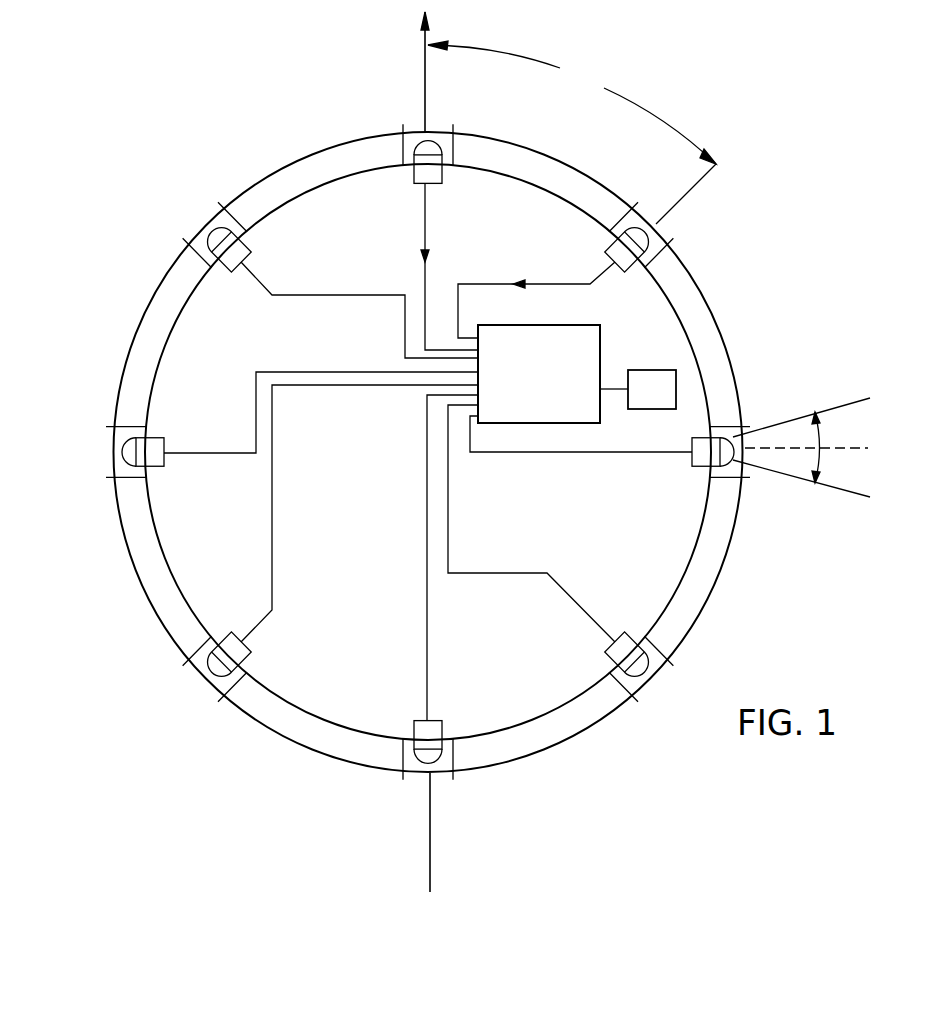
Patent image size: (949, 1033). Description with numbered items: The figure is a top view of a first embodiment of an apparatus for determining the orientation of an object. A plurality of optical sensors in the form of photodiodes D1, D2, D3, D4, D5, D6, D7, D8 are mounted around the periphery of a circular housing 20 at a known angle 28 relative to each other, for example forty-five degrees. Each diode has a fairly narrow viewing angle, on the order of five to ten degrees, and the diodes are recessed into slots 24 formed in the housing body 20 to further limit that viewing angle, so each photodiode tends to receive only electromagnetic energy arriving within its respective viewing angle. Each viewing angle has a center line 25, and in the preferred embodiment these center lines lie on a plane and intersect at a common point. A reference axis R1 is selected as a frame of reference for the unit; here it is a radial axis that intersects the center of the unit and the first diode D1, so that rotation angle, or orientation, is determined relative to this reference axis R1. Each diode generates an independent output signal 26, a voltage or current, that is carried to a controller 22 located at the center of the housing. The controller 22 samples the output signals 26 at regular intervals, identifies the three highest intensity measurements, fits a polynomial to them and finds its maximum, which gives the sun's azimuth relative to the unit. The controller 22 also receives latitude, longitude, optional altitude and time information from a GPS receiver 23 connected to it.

The housing 20 is at (703, 307).
The controller 22 is at (539, 374).
The GPS receiver 23 is at (645, 370).
The slots 24 is at (740, 456).
The center line 25 is at (854, 446).
The output signal 26 is at (427, 258).
The known angle 28 is at (645, 106).
The photodiode D1 is at (440, 180).
The photodiode D2 is at (622, 268).
The photodiode D3 is at (695, 463).
The photodiode D4 is at (610, 654).
The photodiode D5 is at (418, 725).
The photodiode D6 is at (236, 641).
The photodiode D7 is at (160, 444).
The photodiode D8 is at (240, 252).
The reference axis R1 is at (425, 82).